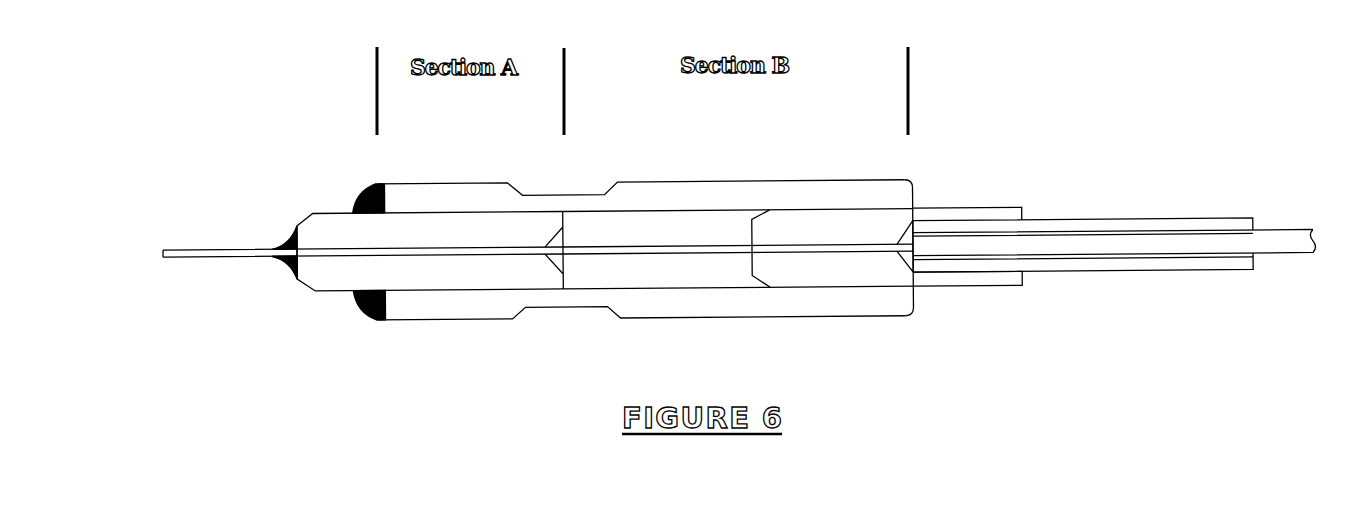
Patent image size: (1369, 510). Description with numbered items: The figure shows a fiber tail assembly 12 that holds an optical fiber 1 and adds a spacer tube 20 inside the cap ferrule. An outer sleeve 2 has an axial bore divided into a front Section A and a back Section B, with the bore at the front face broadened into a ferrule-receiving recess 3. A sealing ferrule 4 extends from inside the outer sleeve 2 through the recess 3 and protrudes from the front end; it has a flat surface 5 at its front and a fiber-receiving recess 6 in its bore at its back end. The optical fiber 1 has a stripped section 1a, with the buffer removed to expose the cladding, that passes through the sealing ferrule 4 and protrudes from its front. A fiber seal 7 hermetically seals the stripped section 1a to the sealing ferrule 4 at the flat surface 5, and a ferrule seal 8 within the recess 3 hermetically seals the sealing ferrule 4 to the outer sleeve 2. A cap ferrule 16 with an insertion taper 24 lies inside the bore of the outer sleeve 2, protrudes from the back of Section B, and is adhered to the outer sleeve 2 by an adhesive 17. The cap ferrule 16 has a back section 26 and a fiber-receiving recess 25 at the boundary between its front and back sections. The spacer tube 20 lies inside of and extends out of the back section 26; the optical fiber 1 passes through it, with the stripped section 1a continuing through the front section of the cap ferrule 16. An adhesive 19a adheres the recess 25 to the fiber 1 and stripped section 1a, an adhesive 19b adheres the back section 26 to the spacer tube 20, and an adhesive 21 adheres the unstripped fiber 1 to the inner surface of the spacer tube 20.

The optical fiber 1 is at (1268, 232).
The stripped section 1a is at (190, 250).
The outer sleeve 2 is at (503, 308).
The ferrule-receiving recess 3 is at (384, 321).
The sealing ferrule 4 is at (315, 273).
The flat surface 5 is at (294, 240).
The fiber-receiving recess 6 is at (558, 268).
The fiber seal 7 is at (280, 236).
The ferrule seal 8 is at (363, 203).
The fiber tail assembly 12 is at (1217, 58).
The cap ferrule 16 is at (817, 218).
The adhesive 17 is at (900, 207).
The adhesive 19a is at (910, 240).
The adhesive 19b is at (1004, 273).
The spacer tube 20 is at (1090, 222).
The adhesive 21 is at (1187, 230).
The insertion taper 24 is at (757, 217).
The fiber-receiving recess 25 is at (905, 252).
The back section 26 is at (966, 273).